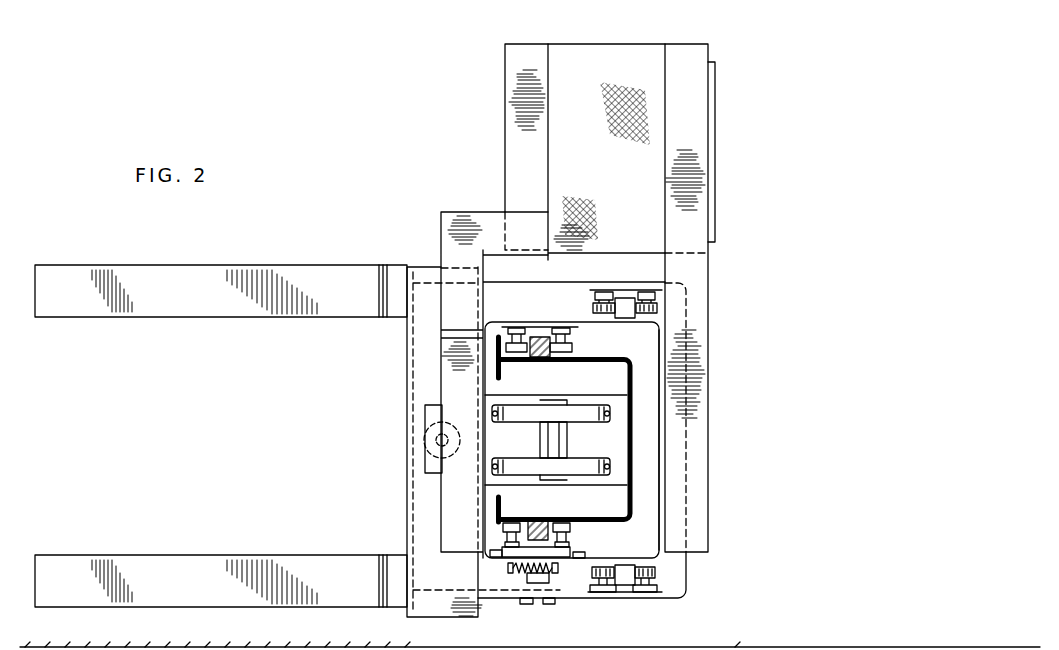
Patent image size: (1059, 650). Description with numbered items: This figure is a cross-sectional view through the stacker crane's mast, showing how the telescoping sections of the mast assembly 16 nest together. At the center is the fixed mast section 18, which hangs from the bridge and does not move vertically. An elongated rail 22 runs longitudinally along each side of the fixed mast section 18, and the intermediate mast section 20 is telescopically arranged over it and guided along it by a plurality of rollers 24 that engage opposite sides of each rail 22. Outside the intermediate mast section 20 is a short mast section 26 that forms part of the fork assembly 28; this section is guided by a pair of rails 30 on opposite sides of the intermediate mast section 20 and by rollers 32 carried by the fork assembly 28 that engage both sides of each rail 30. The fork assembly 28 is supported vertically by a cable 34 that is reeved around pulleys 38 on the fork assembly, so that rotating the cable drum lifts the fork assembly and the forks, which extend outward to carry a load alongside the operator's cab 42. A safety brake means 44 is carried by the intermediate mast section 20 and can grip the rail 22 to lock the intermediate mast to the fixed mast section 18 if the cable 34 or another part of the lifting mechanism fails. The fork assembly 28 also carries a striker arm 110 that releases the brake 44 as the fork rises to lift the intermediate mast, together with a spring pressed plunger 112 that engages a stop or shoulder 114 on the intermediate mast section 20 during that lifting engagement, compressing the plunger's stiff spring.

The mast assembly 16 is at (711, 357).
The fixed mast section 18 is at (623, 358).
The intermediate mast section 20 is at (660, 430).
The elongated rail 22 is at (538, 359).
The rollers 24 is at (513, 328).
The short mast section 26 is at (683, 600).
The fork assembly 28 is at (284, 336).
The rails 30 is at (629, 305).
The rollers 32 is at (595, 308).
The cable 34 is at (615, 462).
The pulleys 38 is at (573, 407).
The operator's cab 42 is at (556, 130).
The safety brake means 44 is at (527, 575).
The striker arm 110 is at (540, 583).
The spring pressed plunger 112 is at (423, 443).
The stop or shoulder 114 is at (427, 440).